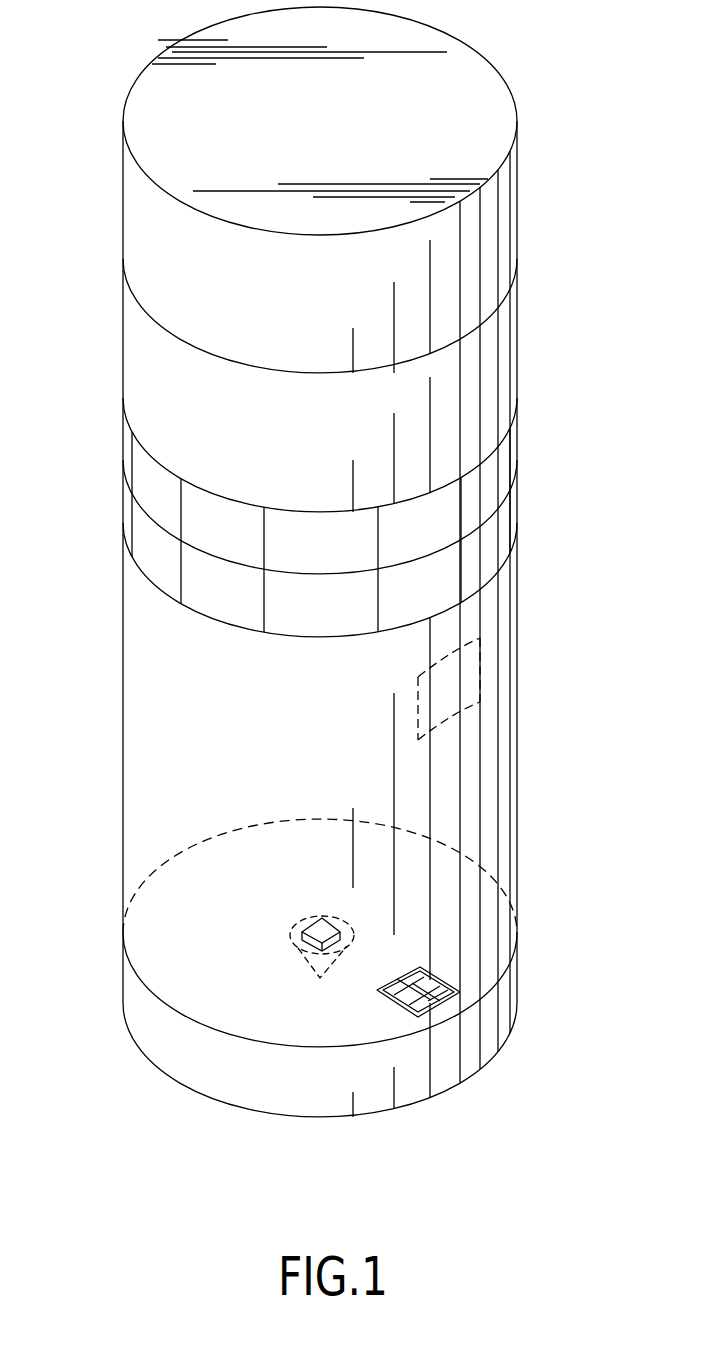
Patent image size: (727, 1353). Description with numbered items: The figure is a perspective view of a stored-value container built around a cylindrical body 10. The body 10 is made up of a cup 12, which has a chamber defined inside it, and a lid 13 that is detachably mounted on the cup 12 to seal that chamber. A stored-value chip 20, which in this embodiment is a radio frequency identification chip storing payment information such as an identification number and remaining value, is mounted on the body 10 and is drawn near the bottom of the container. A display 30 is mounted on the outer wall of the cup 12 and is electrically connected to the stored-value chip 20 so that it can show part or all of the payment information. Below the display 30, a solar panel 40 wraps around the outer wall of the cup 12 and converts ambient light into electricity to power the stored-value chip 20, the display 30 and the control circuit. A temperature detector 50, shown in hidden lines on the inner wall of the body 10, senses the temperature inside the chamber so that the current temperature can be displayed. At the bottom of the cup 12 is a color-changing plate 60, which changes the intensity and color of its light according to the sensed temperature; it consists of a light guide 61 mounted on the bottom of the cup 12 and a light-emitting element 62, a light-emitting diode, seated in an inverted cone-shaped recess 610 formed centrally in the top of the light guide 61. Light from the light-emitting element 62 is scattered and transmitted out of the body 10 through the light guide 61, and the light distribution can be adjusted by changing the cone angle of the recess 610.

The body 10 is at (110, 738).
The cup 12 is at (133, 810).
The lid 13 is at (138, 230).
The stored-value chip 20 is at (447, 980).
The display 30 is at (507, 352).
The solar panel 40 is at (497, 552).
The temperature detector 50 is at (468, 683).
The color-changing plate 60 is at (522, 1003).
The light guide 61 is at (142, 957).
The light-emitting element 62 is at (316, 917).
The inverted cone-shaped recess 610 is at (300, 927).